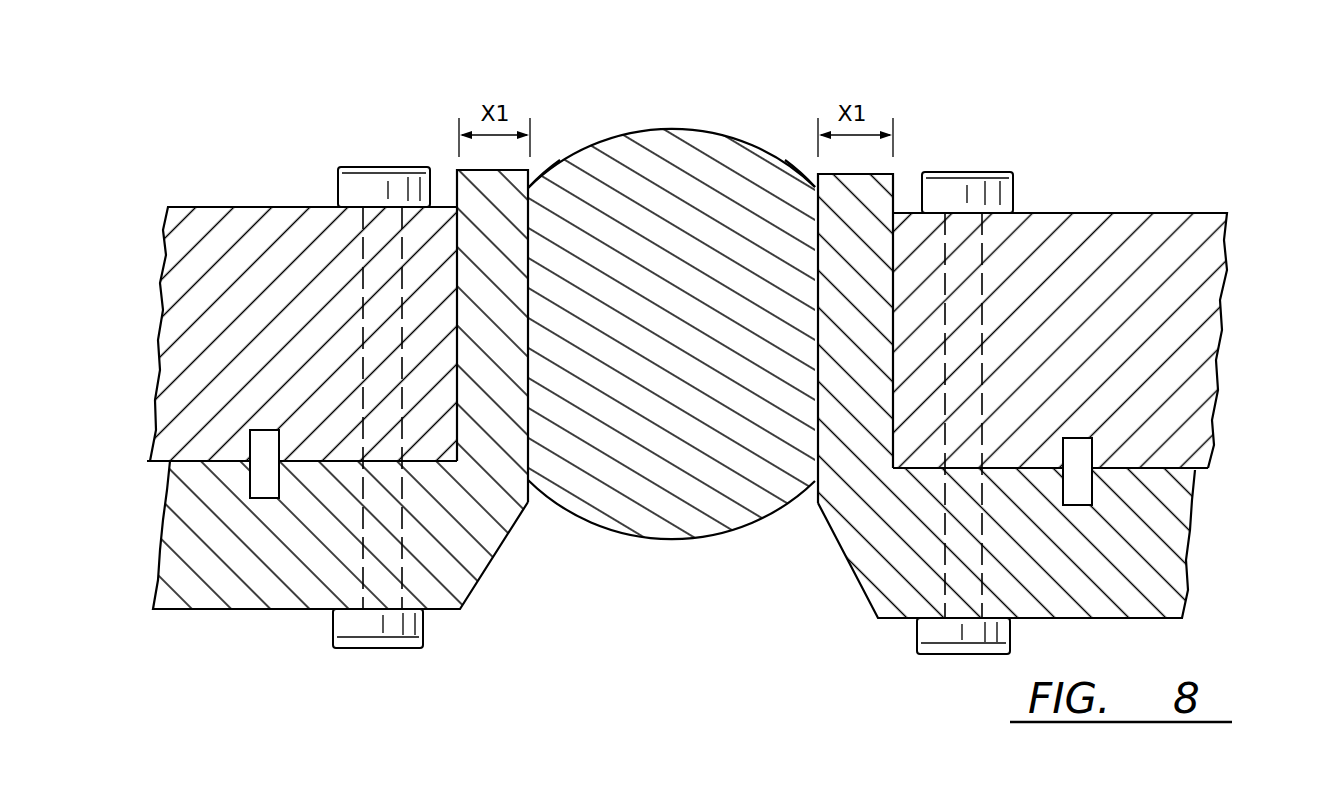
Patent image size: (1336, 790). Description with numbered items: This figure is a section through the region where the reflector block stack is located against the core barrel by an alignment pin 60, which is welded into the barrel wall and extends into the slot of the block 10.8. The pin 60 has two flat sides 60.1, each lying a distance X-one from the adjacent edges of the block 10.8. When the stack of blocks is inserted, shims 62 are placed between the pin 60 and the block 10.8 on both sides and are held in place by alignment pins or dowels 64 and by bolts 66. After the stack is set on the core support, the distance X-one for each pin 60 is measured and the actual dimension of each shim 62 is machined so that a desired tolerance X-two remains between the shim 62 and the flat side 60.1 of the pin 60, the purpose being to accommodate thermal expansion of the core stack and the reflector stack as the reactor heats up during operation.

The block 10.8 is at (178, 290).
The alignment pin 60 is at (687, 158).
The flat sides 60.1 is at (532, 248).
The shims 62 is at (467, 185).
The alignment pins or dowels 64 is at (260, 475).
The bolts 66 is at (348, 182).